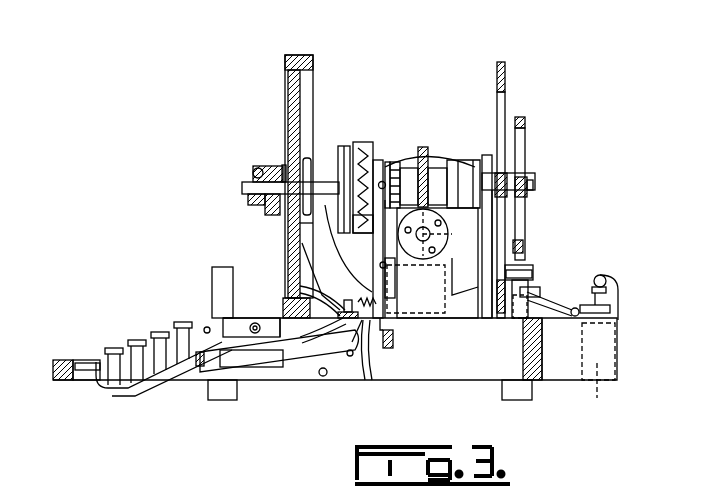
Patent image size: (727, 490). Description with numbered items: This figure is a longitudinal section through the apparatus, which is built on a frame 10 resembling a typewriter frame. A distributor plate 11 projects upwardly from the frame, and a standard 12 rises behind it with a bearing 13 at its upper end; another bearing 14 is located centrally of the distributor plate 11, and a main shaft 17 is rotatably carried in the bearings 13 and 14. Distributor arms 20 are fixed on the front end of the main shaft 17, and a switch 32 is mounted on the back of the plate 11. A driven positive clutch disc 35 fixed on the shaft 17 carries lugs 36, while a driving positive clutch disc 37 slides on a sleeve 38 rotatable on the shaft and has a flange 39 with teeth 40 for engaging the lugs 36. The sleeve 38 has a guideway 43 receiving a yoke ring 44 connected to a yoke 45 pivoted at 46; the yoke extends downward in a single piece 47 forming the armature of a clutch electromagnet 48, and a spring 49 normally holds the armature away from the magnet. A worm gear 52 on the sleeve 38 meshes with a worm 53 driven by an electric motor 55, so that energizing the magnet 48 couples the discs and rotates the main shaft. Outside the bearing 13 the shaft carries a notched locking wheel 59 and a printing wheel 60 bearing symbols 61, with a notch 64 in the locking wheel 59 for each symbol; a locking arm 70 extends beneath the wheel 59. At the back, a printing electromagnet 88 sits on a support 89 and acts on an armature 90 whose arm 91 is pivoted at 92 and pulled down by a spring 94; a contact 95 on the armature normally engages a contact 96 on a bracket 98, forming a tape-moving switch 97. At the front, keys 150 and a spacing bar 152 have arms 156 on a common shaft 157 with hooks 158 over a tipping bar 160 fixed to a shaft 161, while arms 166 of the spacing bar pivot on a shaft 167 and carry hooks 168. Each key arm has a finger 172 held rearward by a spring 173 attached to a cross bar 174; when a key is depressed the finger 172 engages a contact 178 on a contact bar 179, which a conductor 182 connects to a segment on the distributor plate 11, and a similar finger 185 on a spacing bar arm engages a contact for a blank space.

The frame 10 is at (485, 383).
The distributor plate 11 is at (289, 100).
The standard 12 is at (492, 236).
The bearing 13 is at (487, 158).
The bearing 14 is at (280, 170).
The main shaft 17 is at (240, 188).
The distributor arms 20 is at (250, 172).
The switch 32 is at (308, 158).
The driven positive clutch disc 35 is at (352, 212).
The lugs 36 is at (365, 147).
The driving positive clutch disc 37 is at (344, 150).
The sleeve 38 is at (435, 178).
The flange 39 is at (383, 182).
The teeth 40 is at (378, 165).
The guideway 43 is at (392, 158).
The yoke ring 44 is at (394, 168).
The yoke 45 is at (384, 205).
The pivot 46 is at (386, 265).
The armature 47 is at (352, 263).
The clutch electromagnet 48 is at (395, 293).
The spring 49 is at (346, 298).
The worm gear 52 is at (423, 150).
The worm 53 is at (448, 236).
The electric motor 55 is at (438, 170).
The locking wheel 59 is at (505, 80).
The printing wheel 60 is at (527, 124).
The symbols 61 is at (522, 118).
The notch 64 is at (501, 62).
The locking arm 70 is at (515, 318).
The printing electromagnet 88 is at (600, 400).
The support 89 is at (572, 383).
The armature 90 is at (574, 310).
The arm 91 is at (540, 290).
The pivot 92 is at (574, 318).
The spring 94 is at (542, 278).
The contact 95 is at (612, 312).
The contact 96 is at (606, 295).
The tape-moving switch 97 is at (601, 275).
The bracket 98 is at (610, 275).
The keys 150 is at (183, 320).
The spacing bar 152 is at (88, 360).
The arm 156 is at (198, 370).
The shaft 157 is at (355, 352).
The hook 158 is at (205, 327).
The tipping bar 160 is at (254, 322).
The shaft 161 is at (268, 290).
The arms 166 is at (158, 388).
The shaft 167 is at (320, 377).
The hook 168 is at (226, 358).
The finger 172 is at (369, 382).
The spring 173 is at (394, 332).
The cross bar 174 is at (388, 350).
The contact 178 is at (345, 321).
The contact bar 179 is at (318, 326).
The conductor 182 is at (300, 243).
The finger 185 is at (345, 357).